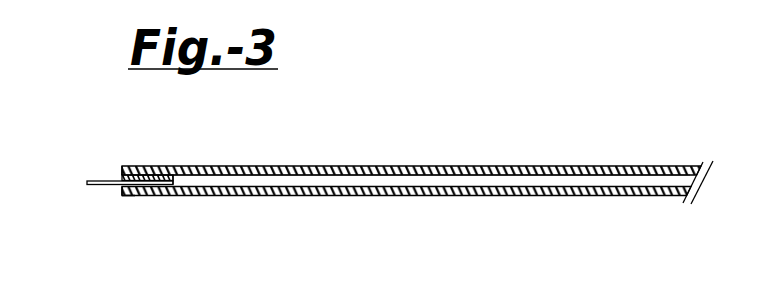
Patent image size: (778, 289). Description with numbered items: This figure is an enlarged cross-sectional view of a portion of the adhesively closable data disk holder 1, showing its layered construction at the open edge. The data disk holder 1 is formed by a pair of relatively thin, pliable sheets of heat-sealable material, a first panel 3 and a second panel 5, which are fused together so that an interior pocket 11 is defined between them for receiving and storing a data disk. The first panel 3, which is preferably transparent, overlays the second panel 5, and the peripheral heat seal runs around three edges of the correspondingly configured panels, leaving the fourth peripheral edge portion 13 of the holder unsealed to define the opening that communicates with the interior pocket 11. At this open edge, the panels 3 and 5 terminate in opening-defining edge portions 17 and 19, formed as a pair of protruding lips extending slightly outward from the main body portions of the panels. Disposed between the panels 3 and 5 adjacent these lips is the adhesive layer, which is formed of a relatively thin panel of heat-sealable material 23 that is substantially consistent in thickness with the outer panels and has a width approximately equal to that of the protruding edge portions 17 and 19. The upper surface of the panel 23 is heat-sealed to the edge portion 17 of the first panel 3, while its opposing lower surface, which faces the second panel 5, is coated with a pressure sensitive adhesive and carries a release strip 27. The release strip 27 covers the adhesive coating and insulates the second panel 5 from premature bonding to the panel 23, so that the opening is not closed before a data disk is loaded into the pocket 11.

The data disk holder 1 is at (529, 154).
The first panel 3 is at (386, 167).
The second panel 5 is at (387, 196).
The interior pocket 11 is at (590, 182).
The fourth peripheral edge portion 13 is at (108, 202).
The opening-defining edge portion 17 is at (126, 165).
The opening-defining edge portion 19 is at (131, 196).
The panel of heat-sealable material 23 is at (173, 175).
The release strip 27 is at (95, 180).